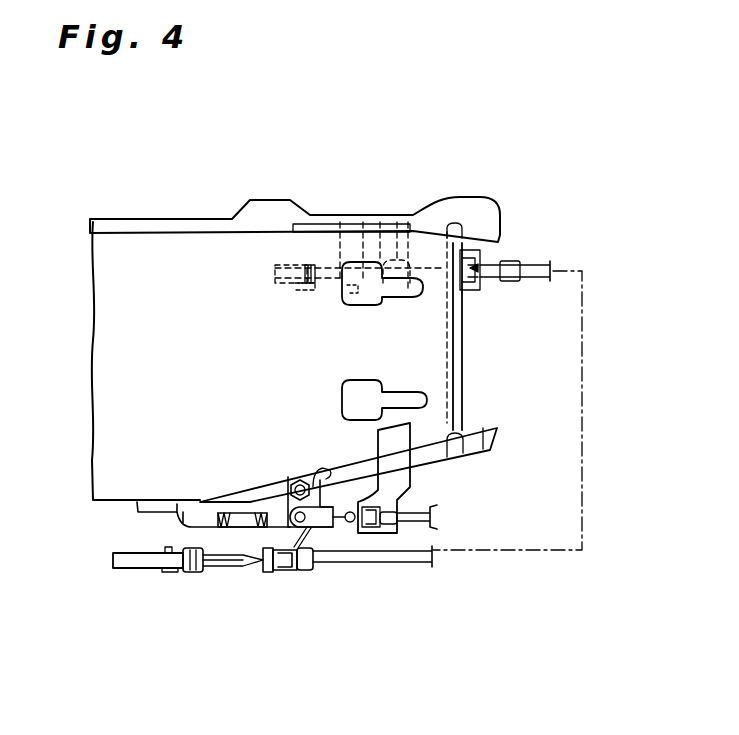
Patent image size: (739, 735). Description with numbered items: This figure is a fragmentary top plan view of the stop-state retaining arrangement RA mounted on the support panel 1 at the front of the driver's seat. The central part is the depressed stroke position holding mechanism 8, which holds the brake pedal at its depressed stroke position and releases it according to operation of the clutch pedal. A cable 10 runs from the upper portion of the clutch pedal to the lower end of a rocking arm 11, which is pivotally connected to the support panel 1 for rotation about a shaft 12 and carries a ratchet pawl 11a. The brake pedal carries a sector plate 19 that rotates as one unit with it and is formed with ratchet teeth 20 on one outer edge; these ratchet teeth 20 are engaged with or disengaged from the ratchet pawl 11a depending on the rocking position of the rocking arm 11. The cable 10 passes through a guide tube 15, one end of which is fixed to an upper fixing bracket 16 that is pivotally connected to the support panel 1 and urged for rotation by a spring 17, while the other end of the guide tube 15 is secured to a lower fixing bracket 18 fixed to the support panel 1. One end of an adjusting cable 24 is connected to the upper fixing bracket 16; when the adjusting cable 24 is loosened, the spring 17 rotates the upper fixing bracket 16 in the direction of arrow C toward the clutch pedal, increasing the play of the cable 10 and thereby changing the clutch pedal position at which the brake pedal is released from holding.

The support panel 1 is at (113, 440).
The depressed stroke position holding mechanism 8 is at (473, 349).
The cable 10 is at (432, 272).
The rocking arm 11 is at (333, 275).
The ratchet pawl 11a is at (313, 283).
The shaft 12 is at (363, 290).
The guide tube 15 is at (537, 262).
The upper fixing bracket 16 is at (292, 573).
The spring 17 is at (235, 513).
The lower fixing bracket 18 is at (473, 293).
The sector plate 19 is at (275, 272).
The ratchet teeth 20 is at (300, 285).
The adjusting cable 24 is at (337, 480).
The stop-state retaining arrangement RA is at (447, 171).
The direction of arrow C is at (290, 585).